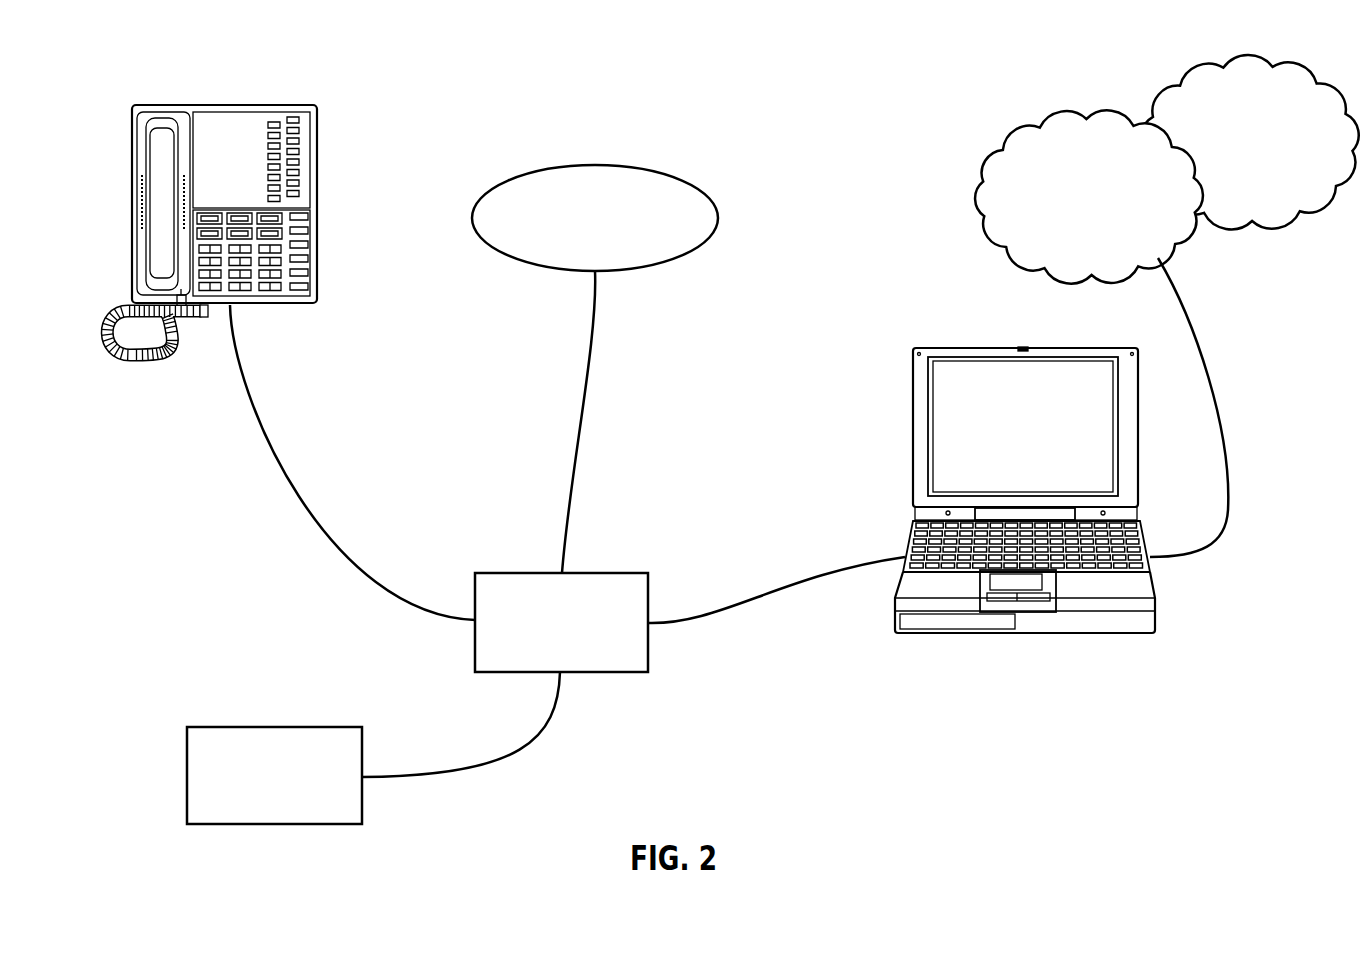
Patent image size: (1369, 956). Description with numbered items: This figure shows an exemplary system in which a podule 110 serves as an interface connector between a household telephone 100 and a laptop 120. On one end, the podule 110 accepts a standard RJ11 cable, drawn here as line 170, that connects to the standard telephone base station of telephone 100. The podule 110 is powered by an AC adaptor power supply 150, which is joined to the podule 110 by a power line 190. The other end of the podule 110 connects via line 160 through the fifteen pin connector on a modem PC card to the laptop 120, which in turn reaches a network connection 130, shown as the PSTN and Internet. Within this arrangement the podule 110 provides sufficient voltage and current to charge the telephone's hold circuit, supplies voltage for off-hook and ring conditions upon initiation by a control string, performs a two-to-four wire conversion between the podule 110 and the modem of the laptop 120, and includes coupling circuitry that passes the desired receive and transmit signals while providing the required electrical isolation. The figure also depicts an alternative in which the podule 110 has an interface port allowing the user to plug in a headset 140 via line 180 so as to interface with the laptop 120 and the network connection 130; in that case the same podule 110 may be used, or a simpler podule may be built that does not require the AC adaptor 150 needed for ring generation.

The telephone 100 is at (317, 187).
The podule 110 is at (620, 573).
The laptop 120 is at (912, 442).
The network connection 130 is at (1223, 405).
The headset 140 is at (655, 168).
The AC adaptor power supply 150 is at (275, 727).
The line 160 is at (718, 617).
The telephone cable 170 is at (305, 497).
The line 180 is at (583, 428).
The power cable 190 is at (490, 765).